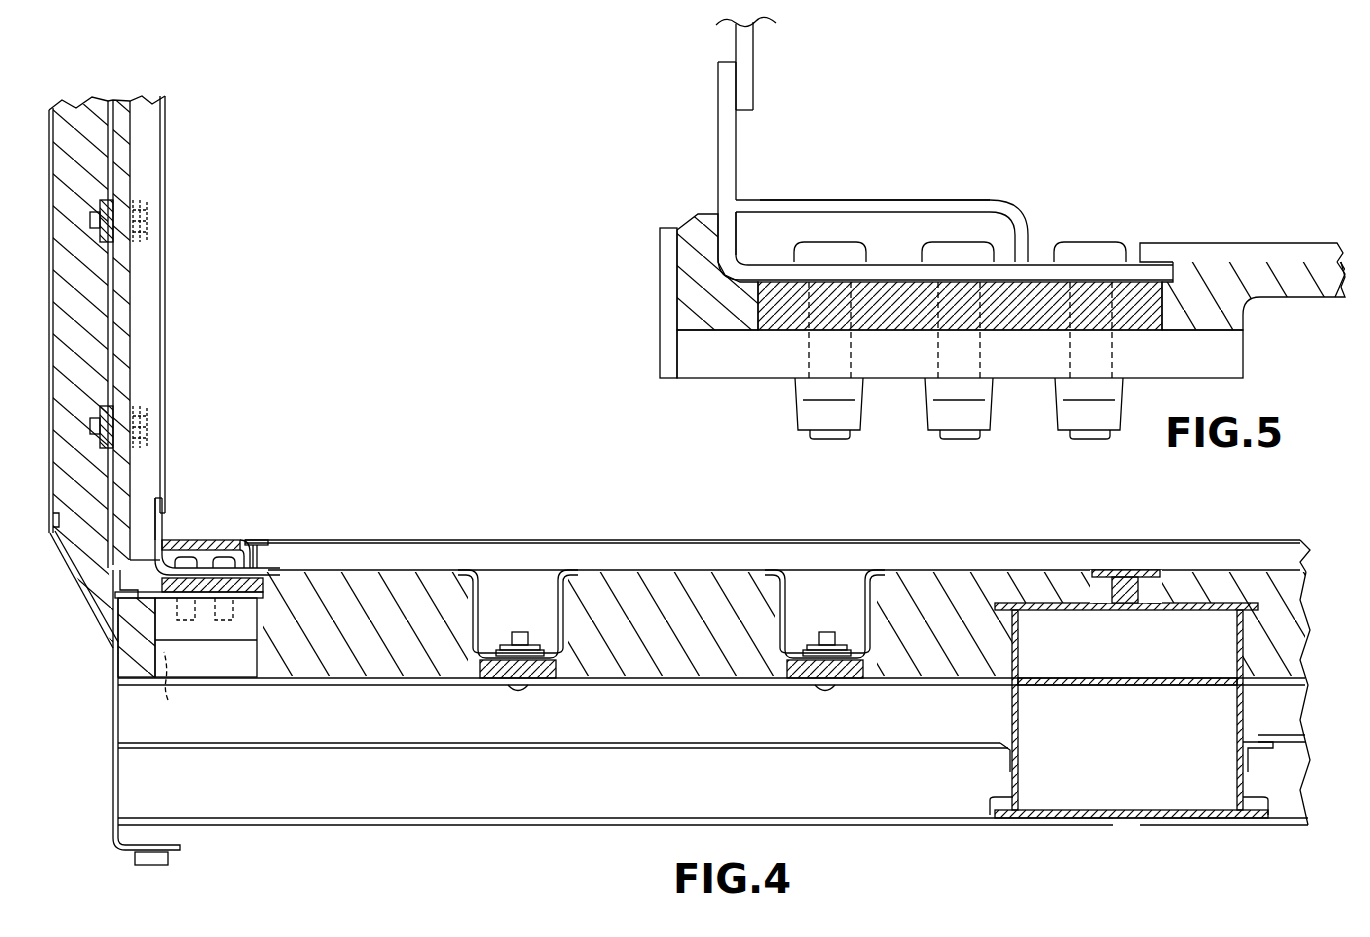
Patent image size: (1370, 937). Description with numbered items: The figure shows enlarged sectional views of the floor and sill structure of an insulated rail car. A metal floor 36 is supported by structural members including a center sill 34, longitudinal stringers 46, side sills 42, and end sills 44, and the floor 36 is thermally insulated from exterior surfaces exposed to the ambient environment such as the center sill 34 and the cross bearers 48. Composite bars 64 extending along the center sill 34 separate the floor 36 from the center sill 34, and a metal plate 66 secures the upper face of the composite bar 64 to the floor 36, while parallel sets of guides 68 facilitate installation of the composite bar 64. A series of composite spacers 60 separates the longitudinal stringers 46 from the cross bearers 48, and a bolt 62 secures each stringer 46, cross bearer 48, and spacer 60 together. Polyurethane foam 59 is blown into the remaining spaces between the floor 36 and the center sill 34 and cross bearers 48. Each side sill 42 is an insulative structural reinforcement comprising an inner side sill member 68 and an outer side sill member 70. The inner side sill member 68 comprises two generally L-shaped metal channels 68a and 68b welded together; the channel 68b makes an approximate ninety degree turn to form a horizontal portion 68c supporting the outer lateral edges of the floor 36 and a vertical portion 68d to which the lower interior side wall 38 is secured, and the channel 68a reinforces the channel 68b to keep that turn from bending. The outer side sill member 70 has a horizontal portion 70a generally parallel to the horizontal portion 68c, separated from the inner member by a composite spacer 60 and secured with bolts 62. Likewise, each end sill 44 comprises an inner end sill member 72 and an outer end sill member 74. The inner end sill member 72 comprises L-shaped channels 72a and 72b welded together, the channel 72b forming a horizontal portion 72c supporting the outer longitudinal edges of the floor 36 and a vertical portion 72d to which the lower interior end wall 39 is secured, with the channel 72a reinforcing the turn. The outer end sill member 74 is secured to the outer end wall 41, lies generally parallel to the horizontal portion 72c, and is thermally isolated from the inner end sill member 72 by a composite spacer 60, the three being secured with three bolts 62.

In FIG. 4, the center sill 34 is at (1127, 822).
In FIG. 4, the metal floor 36 is at (719, 538).
In FIG. 5, the metal floor 36 is at (1244, 243).
In FIG. 4, the interior side wall 38 is at (167, 210).
In FIG. 5, the interior end wall 39 is at (754, 74).
In FIG. 5, the outer end wall 41 is at (660, 294).
In FIG. 4, the side sill 42 is at (248, 472).
In FIG. 5, the end sill 44 is at (1146, 158).
In FIG. 4, the longitudinal stringer 46 is at (874, 590).
In FIG. 4, the cross bearer 48 is at (403, 800).
In FIG. 4, the polyurethane foam 59 is at (634, 580).
In FIG. 4, the composite spacer 60 is at (262, 590).
In FIG. 5, the composite spacer 60 is at (904, 282).
In FIG. 4, the bolt 62 is at (249, 624).
In FIG. 5, the bolt 62 is at (832, 240).
In FIG. 4, the composite bar 64 is at (1130, 604).
In FIG. 4, the metal plate 66 is at (1124, 575).
In FIG. 4, the inner side sill member 68 is at (206, 539).
In FIG. 4, the L-shaped metal channel 68a is at (228, 544).
In FIG. 4, the L-shaped metal channel 68b is at (153, 534).
In FIG. 4, the horizontal portion 68c is at (266, 548).
In FIG. 4, the vertical portion 68d is at (188, 538).
In FIG. 4, the outer side sill member 70 is at (113, 745).
In FIG. 4, the horizontal portion 70a is at (207, 600).
In FIG. 5, the inner end sill member 72 is at (998, 192).
In FIG. 5, the L-shaped metal channel 72a is at (900, 200).
In FIG. 5, the L-shaped metal channel 72b is at (774, 242).
In FIG. 5, the horizontal portion 72c is at (1042, 262).
In FIG. 5, the vertical portion 72d is at (716, 136).
In FIG. 5, the outer end sill member 74 is at (727, 378).